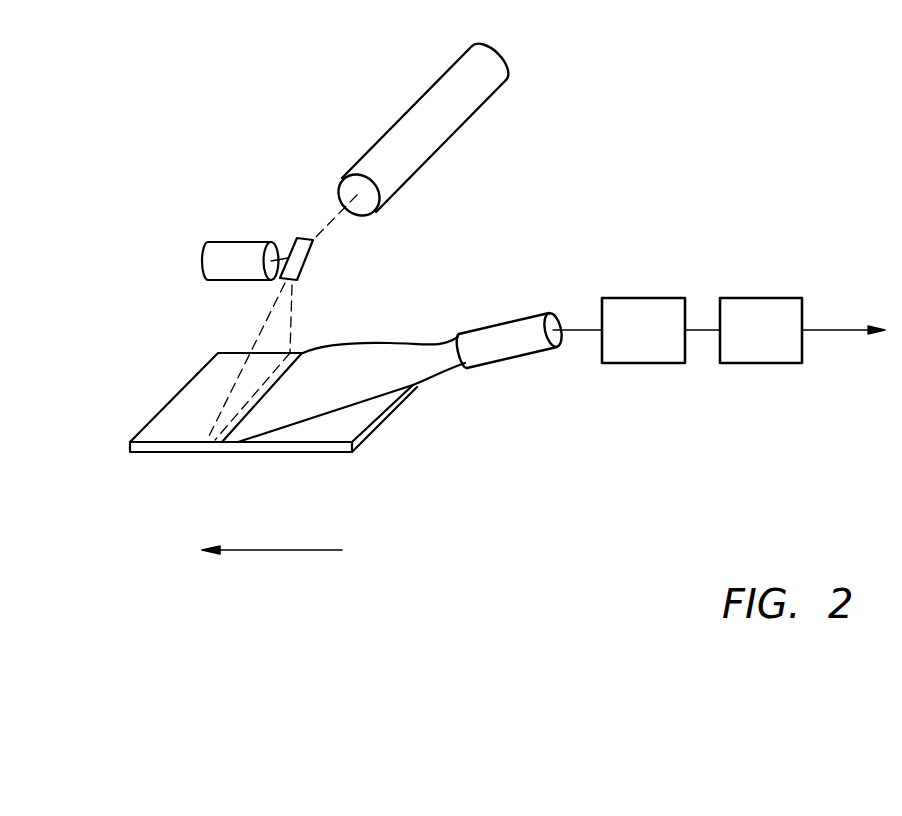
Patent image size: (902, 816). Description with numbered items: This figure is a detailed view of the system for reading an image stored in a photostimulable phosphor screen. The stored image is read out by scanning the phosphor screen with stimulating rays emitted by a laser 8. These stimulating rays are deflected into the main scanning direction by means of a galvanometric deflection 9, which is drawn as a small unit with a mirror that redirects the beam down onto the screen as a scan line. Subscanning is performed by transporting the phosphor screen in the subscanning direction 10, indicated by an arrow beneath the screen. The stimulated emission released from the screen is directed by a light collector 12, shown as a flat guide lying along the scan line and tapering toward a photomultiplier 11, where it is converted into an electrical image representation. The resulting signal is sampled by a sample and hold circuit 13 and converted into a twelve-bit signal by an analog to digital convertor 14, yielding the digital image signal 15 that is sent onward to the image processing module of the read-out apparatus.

The laser 8 is at (397, 122).
The galvanometric deflection 9 is at (297, 238).
The subscanning direction 10 is at (180, 452).
The photomultiplier 11 is at (502, 322).
The light collector 12 is at (362, 345).
The sample and hold circuit 13 is at (643, 298).
The analog to digital convertor 14 is at (762, 298).
The digital image signal 15 is at (840, 330).